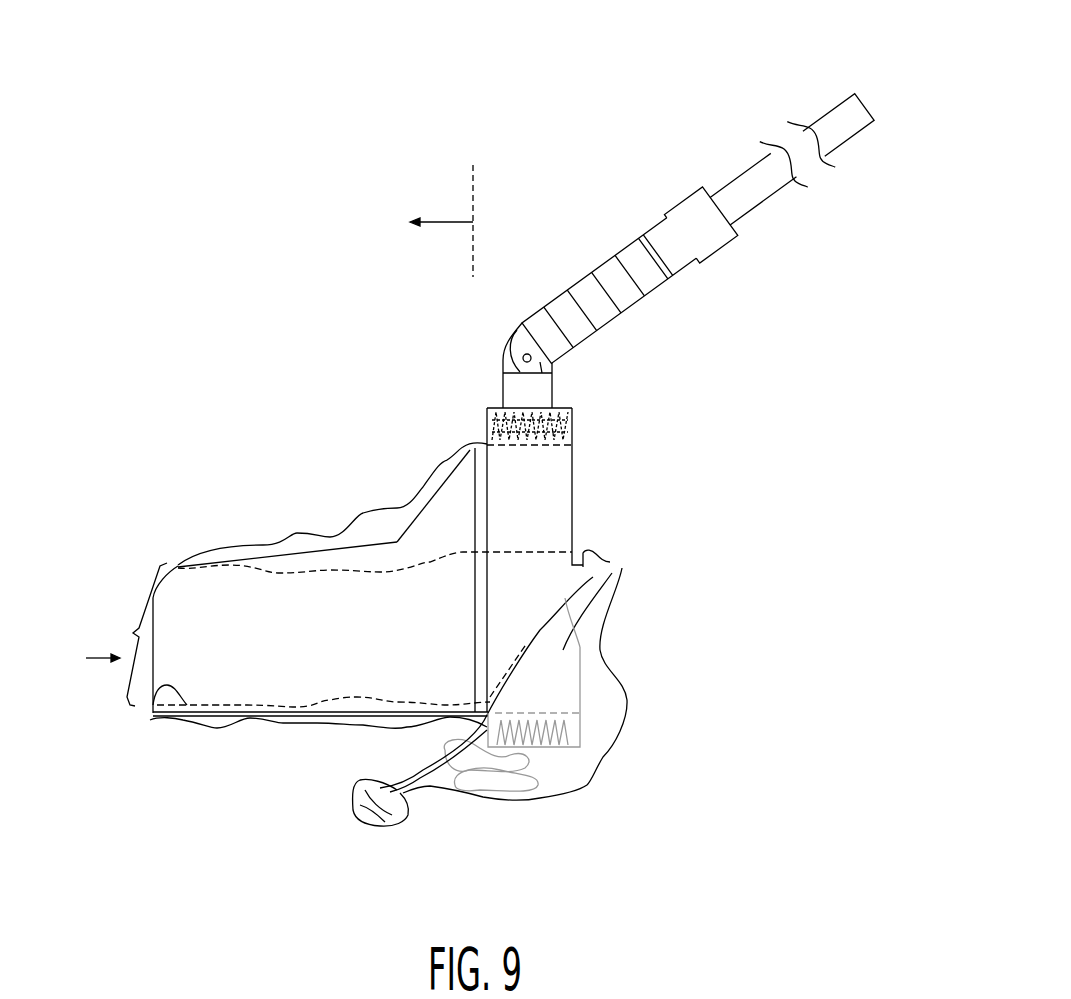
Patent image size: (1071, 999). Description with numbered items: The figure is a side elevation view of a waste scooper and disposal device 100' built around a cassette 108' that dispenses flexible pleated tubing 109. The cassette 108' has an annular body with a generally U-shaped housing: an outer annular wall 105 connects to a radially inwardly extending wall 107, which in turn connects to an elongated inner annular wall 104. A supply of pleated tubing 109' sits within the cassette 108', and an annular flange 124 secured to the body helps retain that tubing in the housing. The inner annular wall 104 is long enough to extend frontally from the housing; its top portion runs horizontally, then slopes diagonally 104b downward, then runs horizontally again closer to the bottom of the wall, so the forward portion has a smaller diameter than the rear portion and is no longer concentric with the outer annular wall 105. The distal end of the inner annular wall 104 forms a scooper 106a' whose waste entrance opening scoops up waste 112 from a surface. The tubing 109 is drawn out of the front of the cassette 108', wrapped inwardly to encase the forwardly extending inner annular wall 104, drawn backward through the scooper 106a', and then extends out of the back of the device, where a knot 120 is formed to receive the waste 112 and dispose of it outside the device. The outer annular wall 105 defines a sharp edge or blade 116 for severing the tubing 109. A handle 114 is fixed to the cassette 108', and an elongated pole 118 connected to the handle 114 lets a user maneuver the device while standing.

The waste scooper and disposal device 100' is at (476, 437).
The elongated inner annular wall 104 is at (248, 553).
The diagonally downwardly sloped portion of the inner annular wall 104b is at (405, 512).
The outer annular wall 105 is at (563, 407).
The scooper 106a' is at (124, 634).
The radially inwardly extending wall 107 is at (573, 423).
The cassette 108' is at (570, 578).
The flexible pleated tubing 109 is at (388, 647).
The pleated tubing within the cassette 109' is at (504, 403).
The waste 112 is at (517, 783).
The handle 114 is at (612, 278).
The blade 116 is at (607, 558).
The elongated pole 118 is at (838, 120).
The knot 120 is at (417, 790).
The annular flange 124 is at (487, 420).